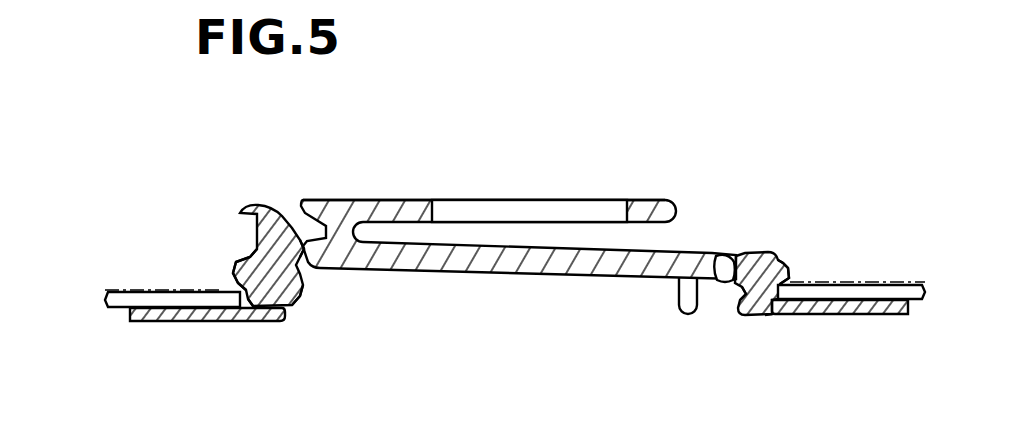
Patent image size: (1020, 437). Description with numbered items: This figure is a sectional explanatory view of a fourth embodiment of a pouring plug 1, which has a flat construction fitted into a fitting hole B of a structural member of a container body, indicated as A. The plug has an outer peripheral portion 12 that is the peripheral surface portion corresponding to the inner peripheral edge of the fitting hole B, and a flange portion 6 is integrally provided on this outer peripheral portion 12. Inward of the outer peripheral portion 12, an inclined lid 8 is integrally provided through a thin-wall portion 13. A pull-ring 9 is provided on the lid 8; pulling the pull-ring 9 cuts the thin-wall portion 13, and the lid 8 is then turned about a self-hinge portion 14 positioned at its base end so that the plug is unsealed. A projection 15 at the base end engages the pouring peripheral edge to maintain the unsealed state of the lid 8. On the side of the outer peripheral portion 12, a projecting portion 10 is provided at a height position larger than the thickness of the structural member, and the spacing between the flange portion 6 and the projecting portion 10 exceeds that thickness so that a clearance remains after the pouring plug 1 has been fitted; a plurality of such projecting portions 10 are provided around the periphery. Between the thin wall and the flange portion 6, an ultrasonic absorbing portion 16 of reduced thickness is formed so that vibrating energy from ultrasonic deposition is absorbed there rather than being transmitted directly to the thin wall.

The pouring plug 1 is at (733, 190).
The flange portion 6 is at (160, 323).
The inclined lid 8 is at (532, 247).
The pull-ring 9 is at (410, 200).
The projecting portion 10 is at (235, 273).
The outer peripheral portion 12 is at (246, 212).
The thin-wall portion 13 is at (300, 243).
The self-hinge portion 14 is at (723, 280).
The projection 15 is at (678, 308).
The ultrasonic absorbing portion 16 is at (283, 307).
The panel A is at (157, 287).
The fitting hole B is at (255, 323).